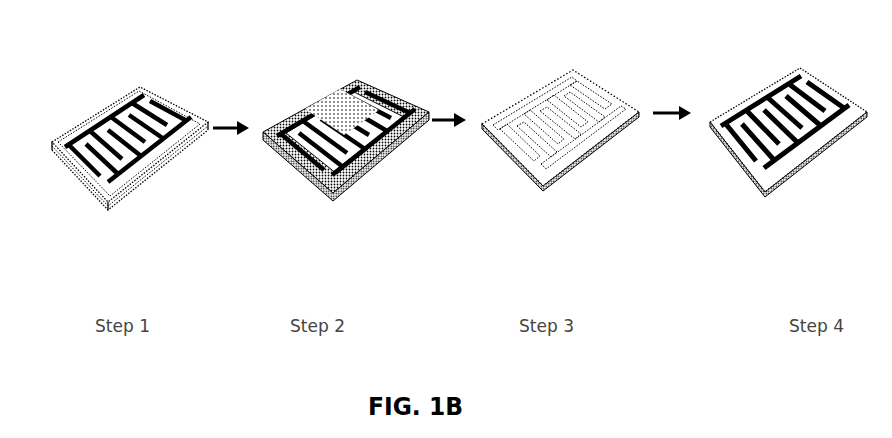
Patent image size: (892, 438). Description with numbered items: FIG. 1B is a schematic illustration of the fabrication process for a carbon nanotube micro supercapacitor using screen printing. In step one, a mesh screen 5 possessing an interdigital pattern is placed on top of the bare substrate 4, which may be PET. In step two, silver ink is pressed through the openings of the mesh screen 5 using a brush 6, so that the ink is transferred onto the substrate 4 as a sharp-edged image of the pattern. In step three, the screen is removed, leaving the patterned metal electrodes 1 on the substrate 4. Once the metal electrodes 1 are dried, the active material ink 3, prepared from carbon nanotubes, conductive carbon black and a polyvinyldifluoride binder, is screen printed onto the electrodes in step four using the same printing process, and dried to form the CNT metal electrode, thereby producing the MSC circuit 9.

The metal electrodes 1 is at (540, 77).
The active material ink 3 is at (742, 167).
The substrate 4 is at (138, 199).
The mesh screen 5 is at (117, 112).
The brush 6 is at (338, 91).
The MSC circuit 9 is at (763, 80).